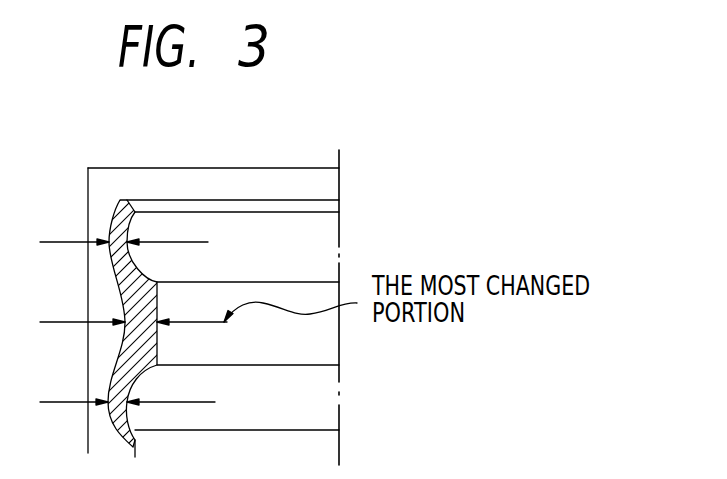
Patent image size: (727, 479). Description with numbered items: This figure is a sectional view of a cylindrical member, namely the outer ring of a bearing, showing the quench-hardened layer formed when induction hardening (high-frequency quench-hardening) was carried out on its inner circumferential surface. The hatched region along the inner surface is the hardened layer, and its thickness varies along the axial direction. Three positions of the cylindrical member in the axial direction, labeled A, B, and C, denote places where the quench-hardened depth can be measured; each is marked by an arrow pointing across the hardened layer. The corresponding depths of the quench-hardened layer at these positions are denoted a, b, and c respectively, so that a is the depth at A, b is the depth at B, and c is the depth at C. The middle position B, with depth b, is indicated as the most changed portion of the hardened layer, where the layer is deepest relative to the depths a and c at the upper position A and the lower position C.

The depth of the quench-hardened layer at A a is at (74, 226).
The position of the cylindrical member in the axial direction A is at (167, 228).
The depth of the quench-hardened layer at B b is at (82, 308).
The position of the cylindrical member in the axial direction B is at (192, 308).
The depth of the quench-hardened layer at C c is at (74, 384).
The position of the cylindrical member in the axial direction C is at (171, 388).